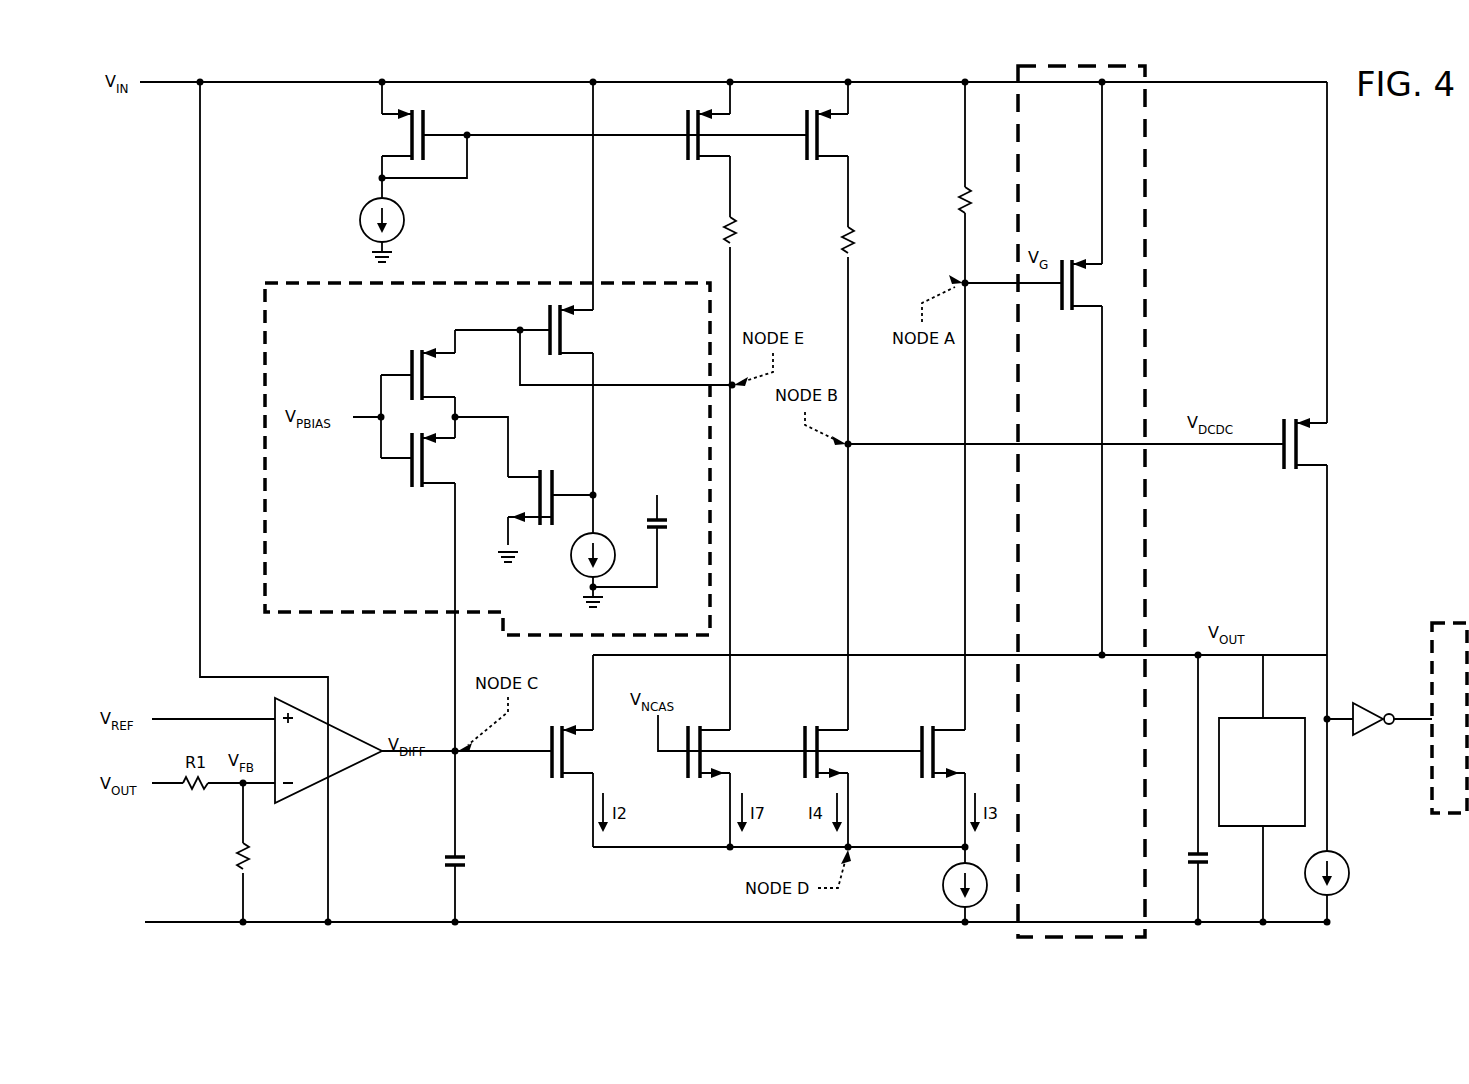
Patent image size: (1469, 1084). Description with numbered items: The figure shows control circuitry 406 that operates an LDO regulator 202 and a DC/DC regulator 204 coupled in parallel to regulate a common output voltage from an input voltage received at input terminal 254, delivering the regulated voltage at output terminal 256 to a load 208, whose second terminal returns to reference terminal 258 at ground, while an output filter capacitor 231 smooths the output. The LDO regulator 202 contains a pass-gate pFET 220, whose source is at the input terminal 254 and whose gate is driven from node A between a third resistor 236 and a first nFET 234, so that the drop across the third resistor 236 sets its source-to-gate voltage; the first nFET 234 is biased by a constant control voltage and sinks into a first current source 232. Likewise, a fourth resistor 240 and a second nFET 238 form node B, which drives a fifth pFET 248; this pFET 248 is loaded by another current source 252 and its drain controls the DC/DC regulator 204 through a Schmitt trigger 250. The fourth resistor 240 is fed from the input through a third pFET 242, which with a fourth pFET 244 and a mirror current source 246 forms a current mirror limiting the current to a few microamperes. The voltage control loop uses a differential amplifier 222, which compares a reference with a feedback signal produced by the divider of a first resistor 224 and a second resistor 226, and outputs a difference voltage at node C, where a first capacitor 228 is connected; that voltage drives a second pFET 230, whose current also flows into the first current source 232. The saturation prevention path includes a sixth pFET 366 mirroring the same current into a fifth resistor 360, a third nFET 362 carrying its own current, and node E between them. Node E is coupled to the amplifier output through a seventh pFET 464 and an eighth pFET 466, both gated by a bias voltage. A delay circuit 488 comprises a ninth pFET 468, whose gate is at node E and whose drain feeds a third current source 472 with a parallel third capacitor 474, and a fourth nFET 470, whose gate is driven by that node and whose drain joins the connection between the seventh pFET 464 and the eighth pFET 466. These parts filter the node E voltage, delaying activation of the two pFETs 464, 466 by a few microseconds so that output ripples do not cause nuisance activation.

The input terminal 254 is at (173, 86).
The pFET MP4 244 is at (426, 132).
The current source I2 246 is at (360, 224).
The pFET MP6 366 is at (684, 127).
The resistor R5 360 is at (724, 230).
The pFET MP3 242 is at (803, 158).
The resistor R4 240 is at (854, 240).
The resistor R3 236 is at (958, 197).
The pFET MP1 220 is at (1058, 310).
The control circuitry 406 is at (1360, 242).
The pFET MP5 248 is at (1282, 462).
The delay circuit 488 is at (487, 459).
The pFET MP9 468 is at (547, 322).
The transistor MP7 464 is at (409, 365).
The transistor MP8 466 is at (410, 467).
The nFET MN4 470 is at (547, 485).
The capacitor C3 474 is at (667, 523).
The current source I3 472 is at (580, 576).
The differential amplifier 222 is at (337, 728).
The resistor R1 224 is at (190, 794).
The resistor R2 226 is at (250, 859).
The reference terminal 258 is at (170, 920).
The capacitor C1 228 is at (467, 860).
The pFET MP2 230 is at (551, 772).
The nFET MN3 362 is at (689, 772).
The nFET MN2 238 is at (797, 734).
The nFET MN1 234 is at (924, 772).
The current source I1 232 is at (943, 886).
The output terminal 256 is at (1197, 654).
The LDO regulator 202 is at (1081, 501).
The load 208 is at (1262, 772).
The output filter capacitor CL 231 is at (1210, 860).
The current source I5 252 is at (1350, 874).
The Schmitt trigger 250 is at (1368, 732).
The DC/DC regulator 204 is at (1430, 655).